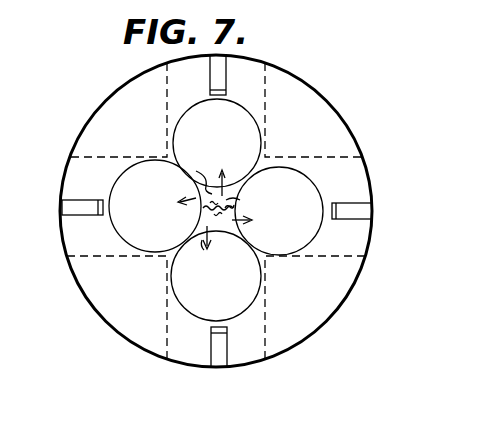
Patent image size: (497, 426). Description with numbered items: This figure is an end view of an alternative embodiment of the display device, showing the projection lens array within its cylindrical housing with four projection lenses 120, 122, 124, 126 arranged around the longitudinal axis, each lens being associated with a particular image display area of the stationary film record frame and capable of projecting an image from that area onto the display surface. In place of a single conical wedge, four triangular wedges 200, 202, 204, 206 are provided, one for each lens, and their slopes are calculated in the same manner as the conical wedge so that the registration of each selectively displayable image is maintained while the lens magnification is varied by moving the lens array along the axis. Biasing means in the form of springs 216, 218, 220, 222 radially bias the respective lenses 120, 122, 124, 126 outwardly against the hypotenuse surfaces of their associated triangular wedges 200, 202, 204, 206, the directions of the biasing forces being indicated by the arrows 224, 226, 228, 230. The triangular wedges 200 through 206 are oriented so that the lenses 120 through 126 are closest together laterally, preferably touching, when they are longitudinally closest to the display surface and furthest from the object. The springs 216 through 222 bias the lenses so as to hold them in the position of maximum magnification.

The projection lens 120 is at (254, 118).
The projection lens 122 is at (304, 236).
The projection lens 124 is at (262, 290).
The projection lens 126 is at (137, 246).
The triangular wedge 200 is at (222, 67).
The triangular wedge 202 is at (364, 212).
The triangular wedge 204 is at (225, 352).
The triangular wedge 206 is at (62, 206).
The spring 216 is at (195, 167).
The spring 218 is at (242, 198).
The spring 220 is at (224, 228).
The spring 222 is at (200, 212).
The arrow 224 is at (237, 162).
The arrow 226 is at (254, 220).
The arrow 228 is at (204, 252).
The arrow 230 is at (196, 198).